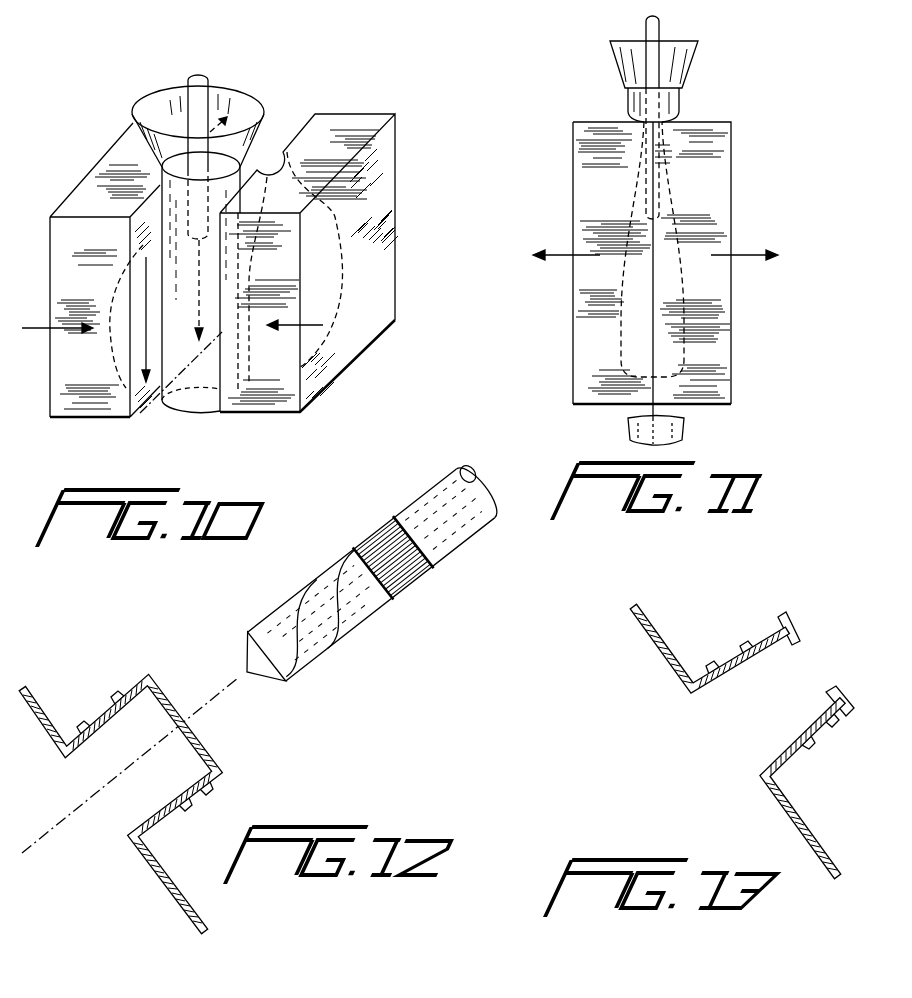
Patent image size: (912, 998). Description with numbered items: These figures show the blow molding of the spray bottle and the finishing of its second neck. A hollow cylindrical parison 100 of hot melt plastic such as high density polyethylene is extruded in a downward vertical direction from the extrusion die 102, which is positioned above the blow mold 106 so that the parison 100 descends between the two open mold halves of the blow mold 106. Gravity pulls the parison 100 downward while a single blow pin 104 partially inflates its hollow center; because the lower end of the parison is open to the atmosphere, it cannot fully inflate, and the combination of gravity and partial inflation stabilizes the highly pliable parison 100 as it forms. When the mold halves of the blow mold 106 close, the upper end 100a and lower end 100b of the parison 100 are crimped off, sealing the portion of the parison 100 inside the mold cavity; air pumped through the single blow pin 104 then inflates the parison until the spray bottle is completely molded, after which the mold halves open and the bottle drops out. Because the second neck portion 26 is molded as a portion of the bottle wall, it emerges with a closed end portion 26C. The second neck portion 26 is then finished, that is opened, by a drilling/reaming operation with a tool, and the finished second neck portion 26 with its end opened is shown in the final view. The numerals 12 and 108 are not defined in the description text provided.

In FIG. 12, the sheet metal strip blank 12 is at (41, 703).
In FIG. 13, the sheet metal strip blank 12 is at (647, 640).
In FIG. 12, the second neck portion 26 is at (112, 697).
In FIG. 13, the second neck portion 26 is at (763, 627).
In FIG. 12, the closed end portion 26C is at (205, 753).
In FIG. 10, the parison 100 is at (162, 398).
In FIG. 11, the upper end 100a is at (679, 103).
In FIG. 11, the lower end 100b is at (628, 430).
In FIG. 10, the extrusion die 102 is at (143, 138).
In FIG. 10, the single blow pin 104 is at (203, 95).
In FIG. 11, the single blow pin 104 is at (646, 31).
In FIG. 10, the blow mold 106 is at (320, 400).
In FIG. 11, the blow mold 106 is at (734, 359).
In FIG. 12, the drill bit 108 is at (350, 607).